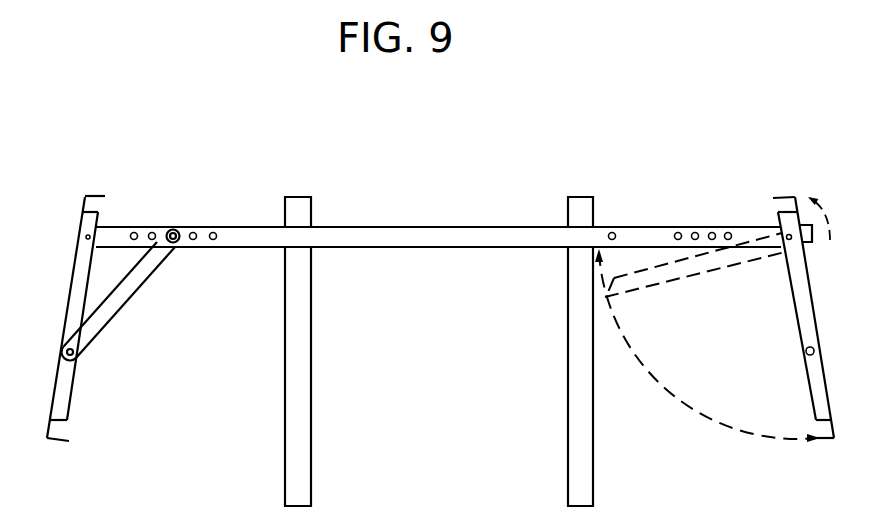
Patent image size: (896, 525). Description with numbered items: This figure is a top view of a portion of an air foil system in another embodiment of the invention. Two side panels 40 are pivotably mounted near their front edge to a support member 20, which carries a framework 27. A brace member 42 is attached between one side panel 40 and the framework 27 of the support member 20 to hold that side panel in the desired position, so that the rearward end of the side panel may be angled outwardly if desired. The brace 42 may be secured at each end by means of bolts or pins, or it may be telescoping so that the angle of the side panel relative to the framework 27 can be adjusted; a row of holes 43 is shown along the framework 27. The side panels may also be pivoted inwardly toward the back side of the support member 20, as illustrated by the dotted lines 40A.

The support member 20 is at (278, 361).
The framework 27 is at (418, 233).
The side panel 40 is at (70, 292).
The dotted lines 40A is at (692, 276).
The brace member 42 is at (124, 304).
The adjustment holes 43 is at (192, 231).